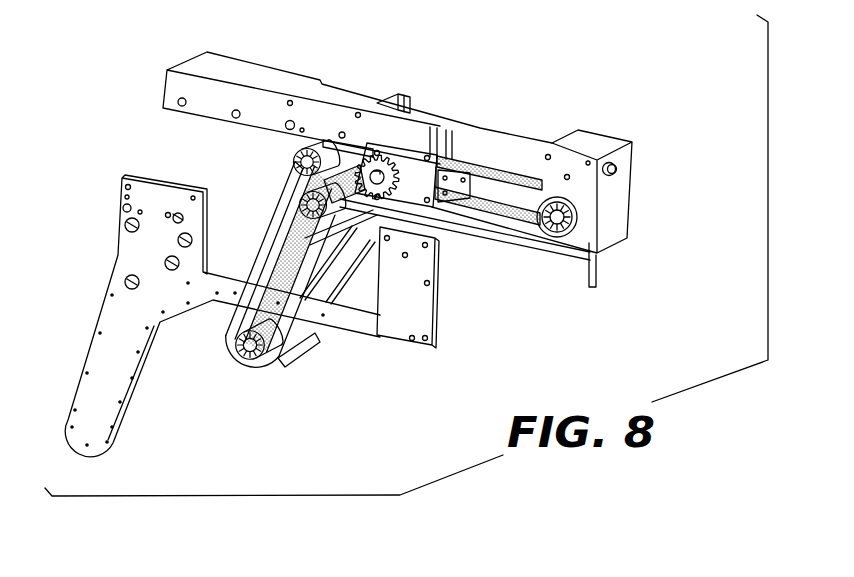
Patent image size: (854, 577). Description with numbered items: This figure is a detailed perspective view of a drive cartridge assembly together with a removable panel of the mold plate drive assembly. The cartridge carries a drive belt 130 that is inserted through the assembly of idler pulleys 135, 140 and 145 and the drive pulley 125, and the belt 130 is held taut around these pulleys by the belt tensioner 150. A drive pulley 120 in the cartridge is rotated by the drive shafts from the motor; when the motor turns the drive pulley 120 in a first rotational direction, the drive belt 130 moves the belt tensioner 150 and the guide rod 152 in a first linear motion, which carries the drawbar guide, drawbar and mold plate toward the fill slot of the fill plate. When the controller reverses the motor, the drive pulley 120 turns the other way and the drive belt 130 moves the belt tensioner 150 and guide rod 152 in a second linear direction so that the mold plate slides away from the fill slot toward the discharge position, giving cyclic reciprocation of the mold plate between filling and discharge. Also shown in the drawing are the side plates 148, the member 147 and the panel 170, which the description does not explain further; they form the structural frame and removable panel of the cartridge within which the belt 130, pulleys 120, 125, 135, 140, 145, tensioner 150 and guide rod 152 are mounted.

The drive pulley 120 is at (242, 363).
The drive pulley 125 is at (277, 365).
The drive belt 130 is at (518, 242).
The idler pulley 135 is at (293, 222).
The idler pulley 140 is at (592, 252).
The idler pulley 145 is at (338, 148).
The housing wall 147 is at (493, 150).
The side plate 148 is at (615, 212).
The belt tensioner 150 is at (415, 173).
The guide rod 152 is at (615, 166).
The mounting plate 170 is at (105, 405).